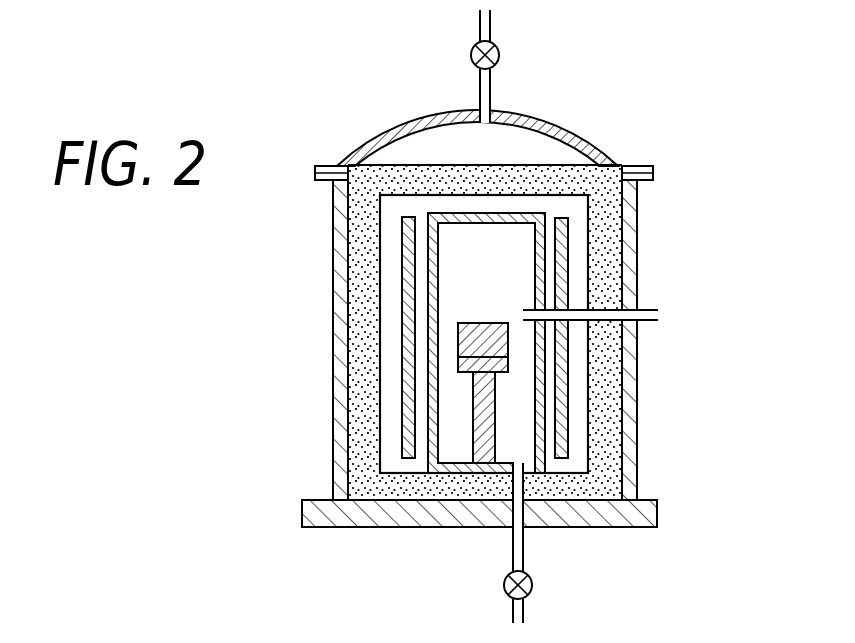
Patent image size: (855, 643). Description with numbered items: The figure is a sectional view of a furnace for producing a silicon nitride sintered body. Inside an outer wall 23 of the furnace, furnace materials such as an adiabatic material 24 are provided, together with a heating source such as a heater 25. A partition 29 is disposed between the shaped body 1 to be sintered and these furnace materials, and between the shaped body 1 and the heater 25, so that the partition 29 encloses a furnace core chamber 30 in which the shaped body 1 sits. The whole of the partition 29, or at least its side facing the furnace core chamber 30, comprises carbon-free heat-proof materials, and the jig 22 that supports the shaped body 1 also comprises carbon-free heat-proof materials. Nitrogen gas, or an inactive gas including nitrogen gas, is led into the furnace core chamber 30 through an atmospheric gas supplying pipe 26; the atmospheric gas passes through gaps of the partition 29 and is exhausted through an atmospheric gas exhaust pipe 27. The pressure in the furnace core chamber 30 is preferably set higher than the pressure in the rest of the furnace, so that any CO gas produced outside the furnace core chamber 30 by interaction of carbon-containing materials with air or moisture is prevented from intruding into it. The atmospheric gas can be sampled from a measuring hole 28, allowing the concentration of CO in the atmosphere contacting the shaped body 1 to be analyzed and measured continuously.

The shaped body 1 is at (458, 338).
The jig 22 is at (485, 437).
The outer wall 23 is at (333, 318).
The adiabatic material 24 is at (603, 388).
The heater 25 is at (402, 250).
The atmospheric gas supplying pipe 26 is at (523, 553).
The atmospheric gas exhaust pipe 27 is at (490, 77).
The measuring hole 28 is at (648, 310).
The partition 29 is at (523, 215).
The furnace core chamber 30 is at (467, 243).